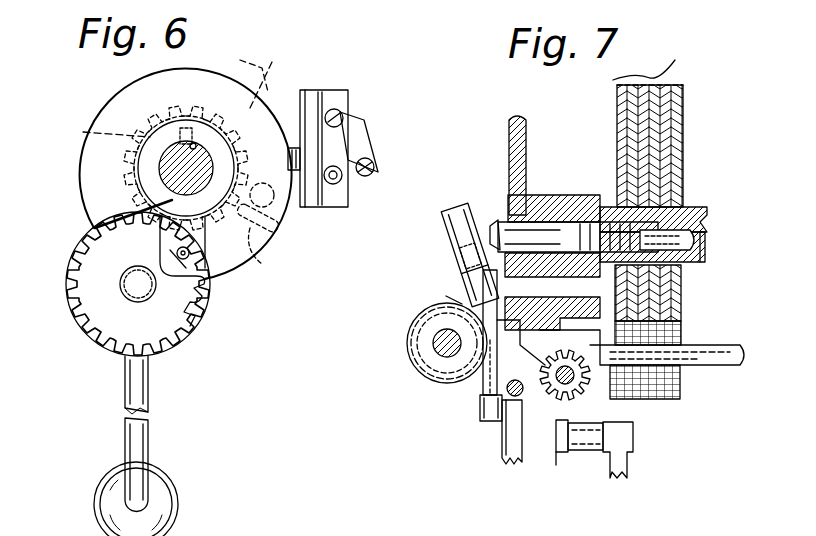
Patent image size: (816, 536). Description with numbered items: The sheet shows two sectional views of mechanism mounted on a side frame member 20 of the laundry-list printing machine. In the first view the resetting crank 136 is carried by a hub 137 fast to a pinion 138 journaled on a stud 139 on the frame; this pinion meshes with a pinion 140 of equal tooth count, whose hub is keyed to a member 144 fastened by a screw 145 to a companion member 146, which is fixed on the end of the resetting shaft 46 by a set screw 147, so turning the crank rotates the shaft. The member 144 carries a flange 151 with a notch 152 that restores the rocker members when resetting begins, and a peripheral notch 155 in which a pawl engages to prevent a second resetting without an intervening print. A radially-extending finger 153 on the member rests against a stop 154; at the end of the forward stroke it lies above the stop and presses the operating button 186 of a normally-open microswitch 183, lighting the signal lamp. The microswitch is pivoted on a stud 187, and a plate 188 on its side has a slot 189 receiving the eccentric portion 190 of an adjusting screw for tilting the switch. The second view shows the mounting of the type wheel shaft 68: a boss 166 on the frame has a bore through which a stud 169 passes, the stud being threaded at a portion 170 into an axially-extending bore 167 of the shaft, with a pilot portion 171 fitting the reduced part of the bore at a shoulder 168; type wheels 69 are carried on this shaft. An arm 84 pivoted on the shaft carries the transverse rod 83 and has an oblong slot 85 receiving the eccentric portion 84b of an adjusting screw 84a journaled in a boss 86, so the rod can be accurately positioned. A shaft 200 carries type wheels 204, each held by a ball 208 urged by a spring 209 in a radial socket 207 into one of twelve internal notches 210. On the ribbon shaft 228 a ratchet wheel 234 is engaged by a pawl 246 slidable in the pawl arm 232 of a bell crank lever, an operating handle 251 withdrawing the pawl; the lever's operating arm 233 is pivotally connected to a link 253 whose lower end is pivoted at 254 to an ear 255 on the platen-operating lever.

In FIG. 6, the pinion 140 is at (90, 133).
In FIG. 6, the flange 151 is at (105, 190).
In FIG. 6, the member 144 is at (248, 71).
In FIG. 6, the notch 152 is at (100, 228).
In FIG. 6, the resetting shaft 46 is at (160, 165).
In FIG. 6, the companion member 146 is at (168, 118).
In FIG. 6, the set screw 147 is at (210, 116).
In FIG. 6, the pinion 138 is at (96, 272).
In FIG. 6, the hub 137 is at (70, 300).
In FIG. 6, the stud 139 is at (136, 298).
In FIG. 6, the resetting crank 136 is at (124, 378).
In FIG. 6, the screw 145 is at (206, 312).
In FIG. 6, the peripheral notch 155 is at (206, 288).
In FIG. 6, the stop 154 is at (282, 222).
In FIG. 6, the finger 153 is at (262, 252).
In FIG. 6, the microswitch 183 is at (312, 100).
In FIG. 6, the operating button 186 is at (290, 152).
In FIG. 6, the stud 187 is at (344, 116).
In FIG. 6, the plate 188 is at (360, 136).
In FIG. 6, the slot 189 is at (372, 162).
In FIG. 6, the eccentric portion 190 is at (362, 176).
In FIG. 7, the side frame member 20 is at (509, 130).
In FIG. 7, the boss 166 is at (512, 170).
In FIG. 7, the stud 169 is at (520, 200).
In FIG. 7, the boss 86 is at (580, 195).
In FIG. 7, the arm 84 is at (612, 195).
In FIG. 7, the externally threaded portion 170 is at (612, 150).
In FIG. 7, the type wheel 69 is at (640, 70).
In FIG. 7, the type wheel shaft 68 is at (680, 210).
In FIG. 7, the axially-extending bore 167 is at (660, 175).
In FIG. 7, the shoulder 168 is at (662, 190).
In FIG. 7, the pilot portion 171 is at (686, 270).
In FIG. 7, the eccentric portion 84b is at (672, 296).
In FIG. 7, the oblong slot 85 is at (680, 322).
In FIG. 7, the transverse rod 83 is at (676, 368).
In FIG. 7, the type wheel 204 is at (620, 398).
In FIG. 7, the operating handle 251 is at (470, 220).
In FIG. 7, the pawl arm 232 is at (452, 262).
In FIG. 7, the adjusting screw 84a is at (486, 286).
In FIG. 7, the pawl 246 is at (448, 298).
In FIG. 7, the shaft 228 is at (406, 344).
In FIG. 7, the ratchet wheel 234 is at (420, 360).
In FIG. 7, the operating arm 233 is at (486, 388).
In FIG. 7, the radial socket 207 is at (524, 394).
In FIG. 7, the internal notches 210 is at (520, 420).
In FIG. 7, the ball 208 is at (564, 350).
In FIG. 7, the spring 209 is at (576, 386).
In FIG. 7, the shaft 200 is at (572, 396).
In FIG. 7, the ear 255 is at (634, 436).
In FIG. 7, the link 253 is at (560, 452).
In FIG. 7, the pivotal connection 254 is at (554, 452).